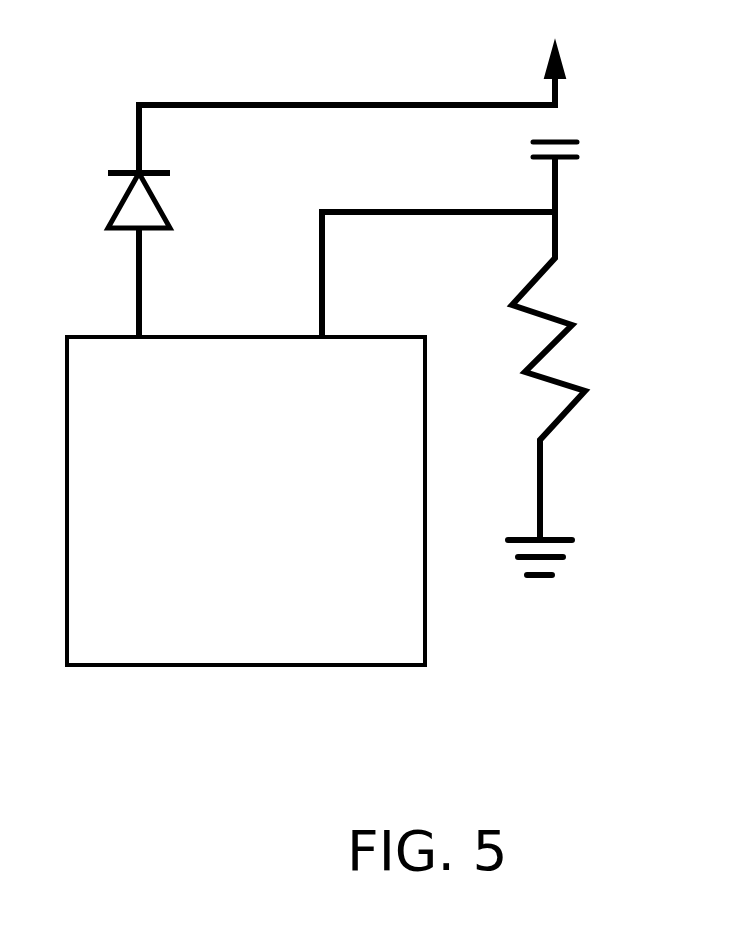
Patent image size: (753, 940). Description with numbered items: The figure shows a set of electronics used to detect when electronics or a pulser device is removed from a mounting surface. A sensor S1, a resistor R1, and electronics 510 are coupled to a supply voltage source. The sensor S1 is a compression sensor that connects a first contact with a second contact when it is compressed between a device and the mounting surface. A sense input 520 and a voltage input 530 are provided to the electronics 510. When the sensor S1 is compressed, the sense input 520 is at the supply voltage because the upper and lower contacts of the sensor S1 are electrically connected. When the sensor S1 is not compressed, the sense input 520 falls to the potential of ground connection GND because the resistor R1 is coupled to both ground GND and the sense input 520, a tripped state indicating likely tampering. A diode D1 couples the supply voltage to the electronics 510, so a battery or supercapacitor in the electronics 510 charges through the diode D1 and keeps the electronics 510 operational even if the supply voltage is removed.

The electronics 510 is at (246, 501).
The sense input 520 is at (393, 213).
The voltage input 530 is at (360, 105).
The diode D1 is at (168, 230).
The sensor S1 is at (567, 137).
The resistor R1 is at (570, 410).
The ground connection GND is at (572, 567).